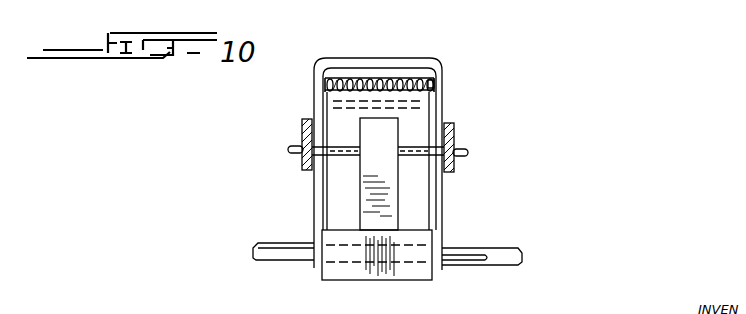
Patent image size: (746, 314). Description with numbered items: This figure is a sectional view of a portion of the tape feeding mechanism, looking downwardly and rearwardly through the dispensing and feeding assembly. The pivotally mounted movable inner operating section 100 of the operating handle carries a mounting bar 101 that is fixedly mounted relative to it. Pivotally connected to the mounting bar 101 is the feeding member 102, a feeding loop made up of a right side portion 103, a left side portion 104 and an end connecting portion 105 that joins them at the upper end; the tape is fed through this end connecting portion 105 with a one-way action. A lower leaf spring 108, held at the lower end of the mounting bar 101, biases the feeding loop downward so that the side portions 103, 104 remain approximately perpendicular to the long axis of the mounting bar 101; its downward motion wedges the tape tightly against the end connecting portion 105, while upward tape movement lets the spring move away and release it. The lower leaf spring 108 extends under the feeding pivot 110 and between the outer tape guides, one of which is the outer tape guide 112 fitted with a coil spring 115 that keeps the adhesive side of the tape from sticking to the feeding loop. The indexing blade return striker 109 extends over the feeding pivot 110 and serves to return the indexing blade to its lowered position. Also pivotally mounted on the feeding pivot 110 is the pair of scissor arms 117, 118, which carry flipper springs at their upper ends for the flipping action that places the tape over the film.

The inner operating section 100 is at (412, 257).
The mounting bar 101 is at (372, 273).
The feeding member 102 is at (387, 171).
The right side portion 103 is at (437, 191).
The left side portion 104 is at (318, 107).
The end connecting portion 105 is at (368, 63).
The lower leaf spring 108 is at (422, 208).
The indexing blade return striker 109 is at (388, 187).
The feeding pivot 110 is at (468, 152).
The outer tape guide 112 is at (430, 82).
The coil spring 115 is at (427, 77).
The scissor arm 117 is at (302, 123).
The scissor arm 118 is at (454, 133).